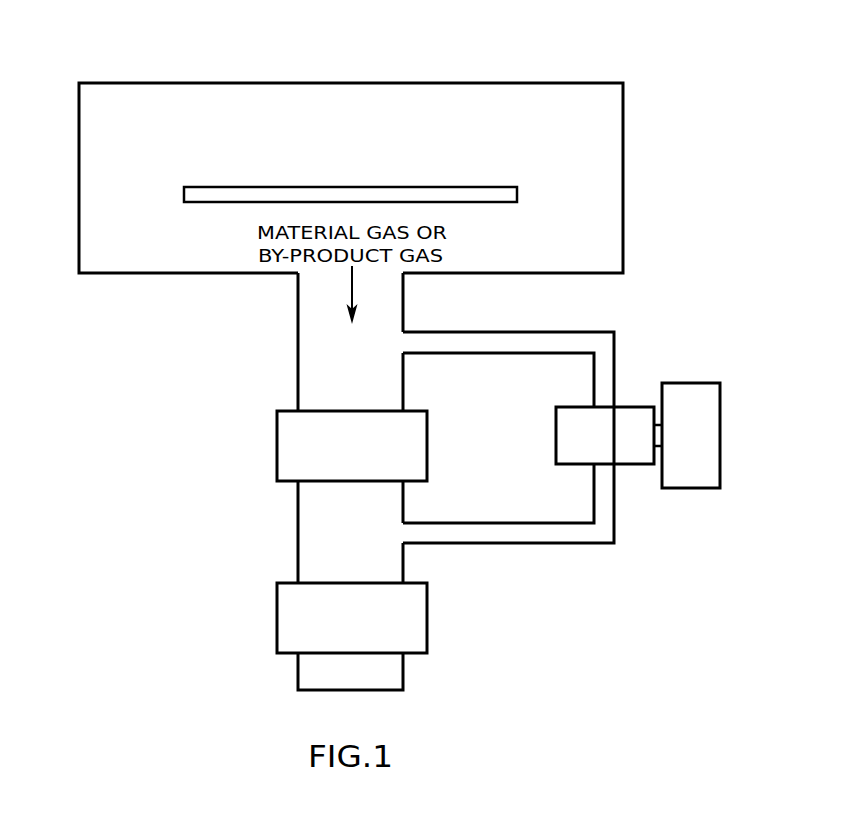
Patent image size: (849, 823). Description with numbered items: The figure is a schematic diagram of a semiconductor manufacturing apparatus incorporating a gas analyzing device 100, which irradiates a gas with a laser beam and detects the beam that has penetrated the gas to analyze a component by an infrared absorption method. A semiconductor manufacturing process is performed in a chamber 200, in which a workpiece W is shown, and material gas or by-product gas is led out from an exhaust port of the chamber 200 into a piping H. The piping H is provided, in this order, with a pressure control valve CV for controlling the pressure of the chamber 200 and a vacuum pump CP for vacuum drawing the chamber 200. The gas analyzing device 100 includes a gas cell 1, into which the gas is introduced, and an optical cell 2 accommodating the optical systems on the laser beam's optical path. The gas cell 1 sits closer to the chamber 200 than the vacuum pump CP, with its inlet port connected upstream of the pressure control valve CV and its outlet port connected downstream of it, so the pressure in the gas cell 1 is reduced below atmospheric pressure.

The chamber 200 is at (468, 83).
The wafer W is at (355, 185).
The piping H is at (298, 348).
The pressure control valve CV is at (277, 445).
The vacuum pump CP is at (277, 617).
The gas analyzing device 100 is at (607, 417).
The gas cell 1 is at (556, 436).
The optical cell 2 is at (720, 436).